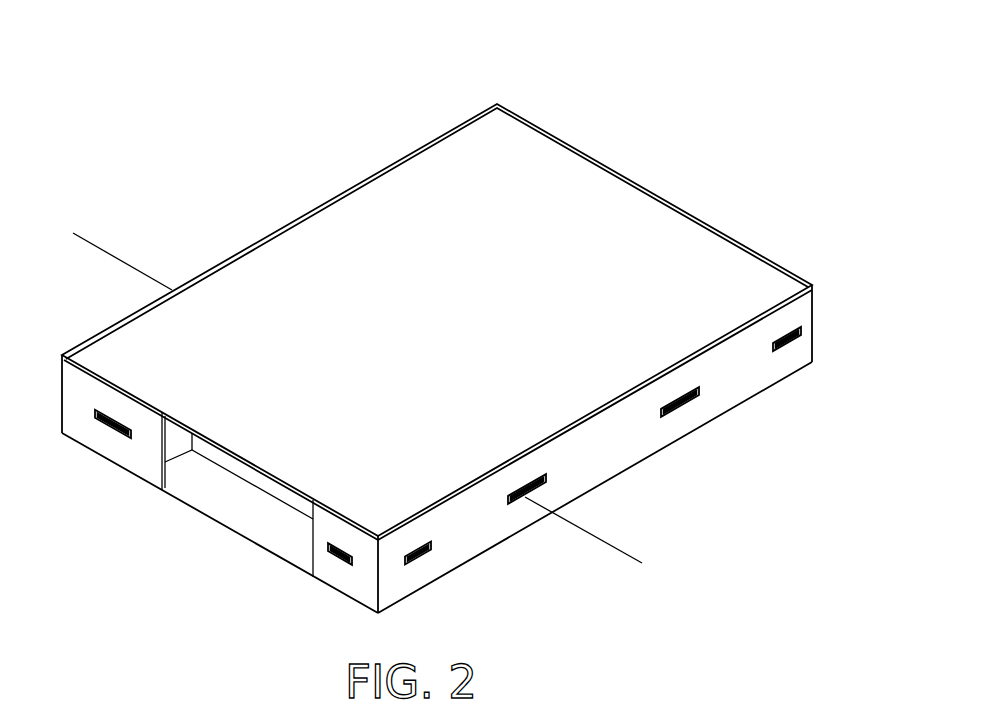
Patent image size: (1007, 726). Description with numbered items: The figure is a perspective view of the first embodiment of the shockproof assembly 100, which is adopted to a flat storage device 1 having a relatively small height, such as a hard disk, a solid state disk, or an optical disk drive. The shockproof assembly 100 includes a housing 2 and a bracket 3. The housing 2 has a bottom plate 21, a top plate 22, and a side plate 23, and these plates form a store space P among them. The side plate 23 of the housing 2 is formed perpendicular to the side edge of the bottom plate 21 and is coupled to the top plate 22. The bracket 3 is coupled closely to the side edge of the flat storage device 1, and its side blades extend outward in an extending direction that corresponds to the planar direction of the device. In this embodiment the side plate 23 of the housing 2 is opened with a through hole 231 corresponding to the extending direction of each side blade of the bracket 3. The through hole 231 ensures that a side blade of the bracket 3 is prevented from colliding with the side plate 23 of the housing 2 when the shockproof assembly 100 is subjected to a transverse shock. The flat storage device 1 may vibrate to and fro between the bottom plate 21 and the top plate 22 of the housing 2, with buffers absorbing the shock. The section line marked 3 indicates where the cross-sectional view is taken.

The shockproof assembly 100 is at (437, 322).
The housing 2 is at (437, 343).
The top plate 22 is at (722, 252).
The side plate 23 is at (595, 449).
The through hole 231 is at (543, 483).
The bottom plate 21 is at (295, 549).
The flat storage device 1 is at (235, 460).
The store space P is at (270, 516).
The bracket 3 is at (96, 257).